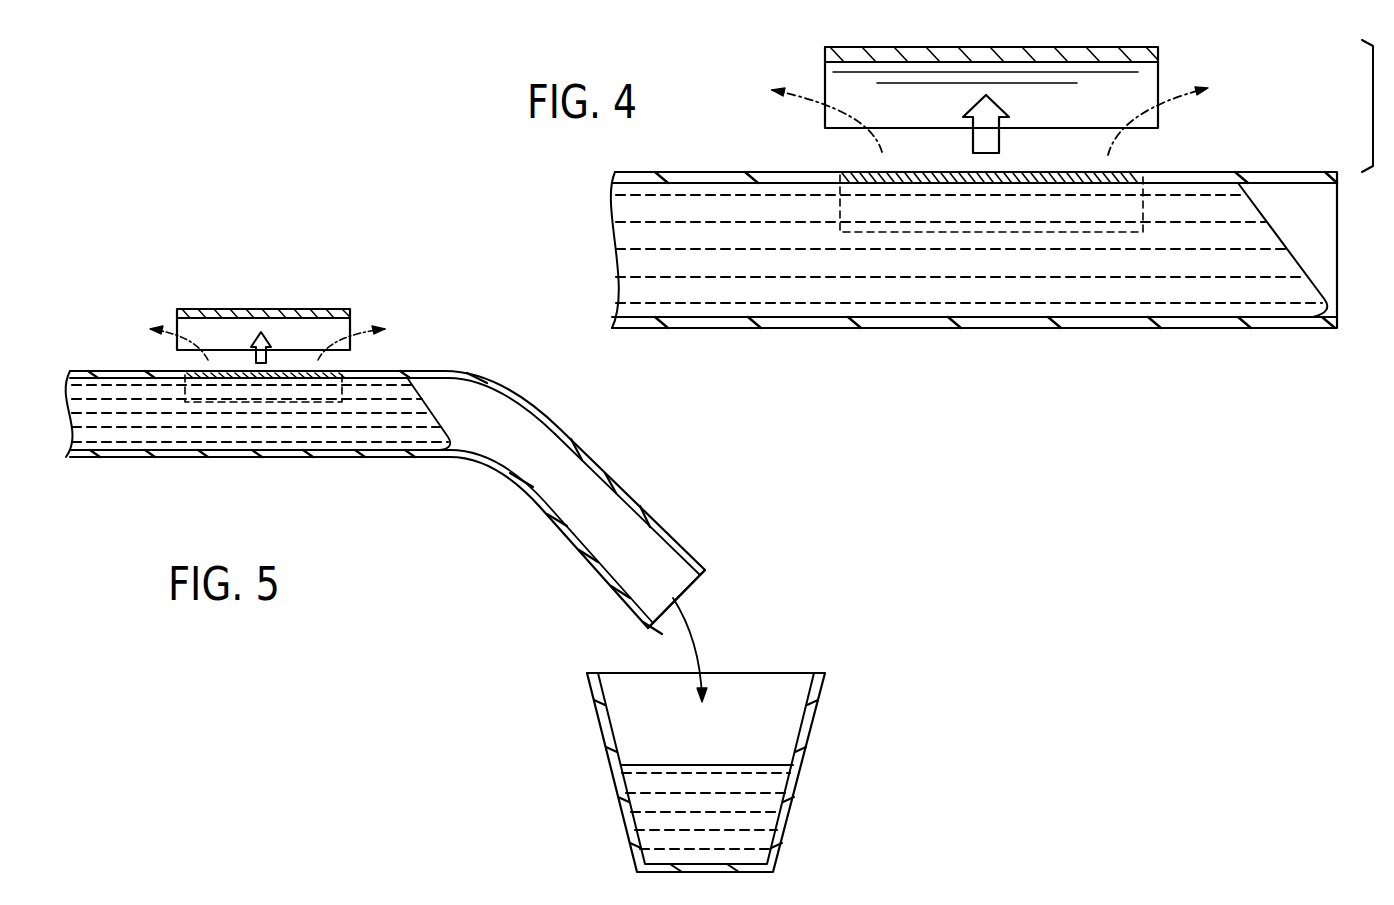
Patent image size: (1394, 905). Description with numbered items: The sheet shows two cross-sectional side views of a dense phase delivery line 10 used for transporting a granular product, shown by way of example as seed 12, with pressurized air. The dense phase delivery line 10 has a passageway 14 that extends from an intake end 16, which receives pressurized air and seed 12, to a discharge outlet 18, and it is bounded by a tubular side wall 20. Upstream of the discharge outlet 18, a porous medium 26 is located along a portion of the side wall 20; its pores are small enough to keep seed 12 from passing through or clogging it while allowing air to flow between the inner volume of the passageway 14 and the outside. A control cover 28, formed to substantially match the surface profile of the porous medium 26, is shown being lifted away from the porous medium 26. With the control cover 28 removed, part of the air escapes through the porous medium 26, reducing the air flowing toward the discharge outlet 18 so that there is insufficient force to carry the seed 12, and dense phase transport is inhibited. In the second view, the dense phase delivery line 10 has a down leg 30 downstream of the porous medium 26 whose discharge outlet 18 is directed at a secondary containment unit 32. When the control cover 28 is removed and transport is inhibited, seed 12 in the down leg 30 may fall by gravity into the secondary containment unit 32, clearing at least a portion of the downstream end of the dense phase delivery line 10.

In FIG. 4, the dense phase delivery line 10 is at (1142, 352).
In FIG. 5, the dense phase delivery line 10 is at (447, 318).
In FIG. 4, the seed 12 is at (862, 290).
In FIG. 5, the seed 12 is at (323, 420).
In FIG. 5, the passageway 14 is at (503, 415).
In FIG. 4, the intake end 16 is at (698, 288).
In FIG. 4, the discharge outlet 18 is at (1338, 267).
In FIG. 5, the discharge outlet 18 is at (690, 593).
In FIG. 4, the side wall 20 is at (1008, 328).
In FIG. 5, the side wall 20 is at (533, 510).
In FIG. 4, the porous medium 26 is at (1128, 175).
In FIG. 5, the porous medium 26 is at (333, 375).
In FIG. 4, the control cover 28 is at (1013, 57).
In FIG. 5, the control cover 28 is at (250, 310).
In FIG. 5, the down leg 30 is at (660, 515).
In FIG. 5, the secondary containment unit 32 is at (840, 760).